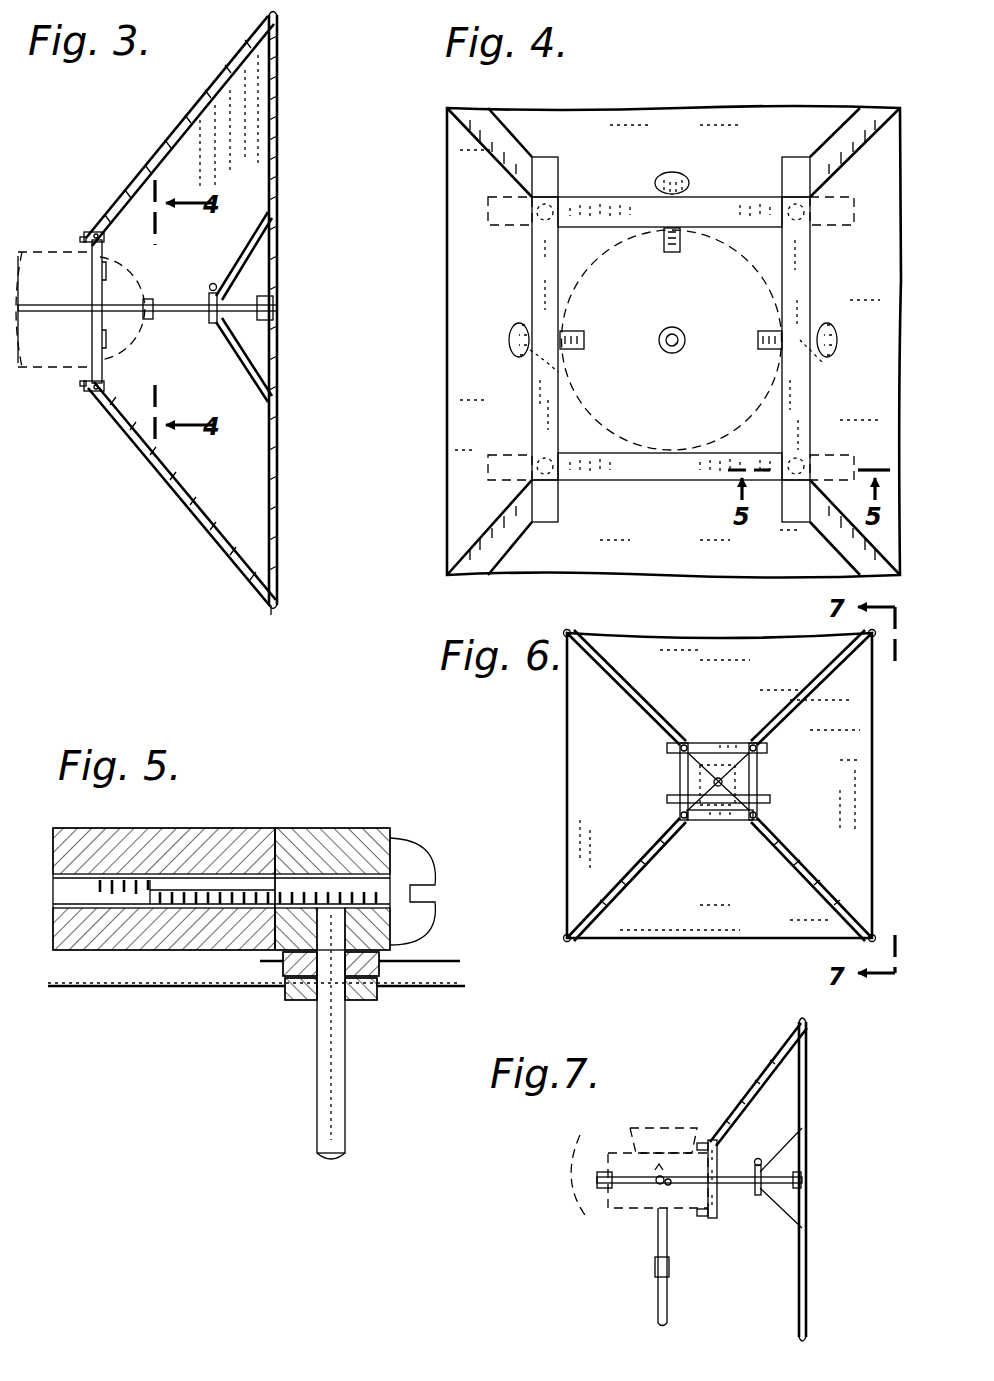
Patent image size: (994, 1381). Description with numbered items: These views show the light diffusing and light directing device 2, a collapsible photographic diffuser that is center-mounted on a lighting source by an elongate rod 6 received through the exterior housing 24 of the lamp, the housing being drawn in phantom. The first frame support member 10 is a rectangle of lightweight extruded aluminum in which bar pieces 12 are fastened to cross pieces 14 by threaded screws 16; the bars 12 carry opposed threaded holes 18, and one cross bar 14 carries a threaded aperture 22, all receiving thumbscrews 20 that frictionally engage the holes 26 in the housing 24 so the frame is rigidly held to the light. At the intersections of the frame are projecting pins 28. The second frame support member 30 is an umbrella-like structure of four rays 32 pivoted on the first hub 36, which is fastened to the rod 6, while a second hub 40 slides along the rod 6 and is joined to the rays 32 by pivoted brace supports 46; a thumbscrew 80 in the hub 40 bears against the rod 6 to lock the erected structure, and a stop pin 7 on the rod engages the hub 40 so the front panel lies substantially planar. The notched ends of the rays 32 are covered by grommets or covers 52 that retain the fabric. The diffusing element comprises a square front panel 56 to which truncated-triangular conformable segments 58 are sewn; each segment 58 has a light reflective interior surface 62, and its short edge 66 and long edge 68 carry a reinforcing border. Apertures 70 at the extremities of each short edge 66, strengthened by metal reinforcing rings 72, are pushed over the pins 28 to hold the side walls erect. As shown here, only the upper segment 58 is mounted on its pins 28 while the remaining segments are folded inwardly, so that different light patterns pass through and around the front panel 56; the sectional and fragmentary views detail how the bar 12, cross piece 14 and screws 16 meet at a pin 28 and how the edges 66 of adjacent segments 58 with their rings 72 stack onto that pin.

In FIG. 3, the light diffusing and light directing device 2 is at (286, 62).
In FIG. 6, the light diffusing and light directing device 2 is at (560, 718).
In FIG. 3, the elongate rod 6 is at (166, 312).
In FIG. 4, the elongate rod 6 is at (674, 330).
In FIG. 7, the elongate rod 6 is at (630, 1185).
In FIG. 3, the stop pin 7 is at (270, 322).
In FIG. 3, the first frame support member 10 is at (106, 360).
In FIG. 4, the first frame support member 10 is at (645, 483).
In FIG. 5, the first frame support member 10 is at (388, 828).
In FIG. 3, the bar pieces 12 is at (103, 280).
In FIG. 4, the bar pieces 12 is at (532, 286).
In FIG. 5, the bar pieces 12 is at (318, 832).
In FIG. 6, the bar pieces 12 is at (680, 790).
In FIG. 7, the bar pieces 12 is at (712, 1179).
In FIG. 3, the cross pieces 14 is at (105, 246).
In FIG. 4, the cross pieces 14 is at (745, 205).
In FIG. 5, the cross pieces 14 is at (178, 832).
In FIG. 6, the cross pieces 14 is at (708, 818).
In FIG. 4, the threaded screws 16 is at (530, 218).
In FIG. 5, the threaded screws 16 is at (412, 862).
In FIG. 4, the threaded holes 18 is at (540, 358).
In FIG. 4, the thumbscrews 20 is at (671, 172).
In FIG. 4, the threaded aperture 22 is at (665, 205).
In FIG. 3, the exterior housing 24 is at (55, 366).
In FIG. 4, the exterior housing 24 is at (796, 415).
In FIG. 7, the exterior housing 24 is at (600, 1140).
In FIG. 4, the holes 26 is at (682, 252).
In FIG. 3, the pins 28 is at (84, 238).
In FIG. 4, the pins 28 is at (543, 226).
In FIG. 5, the pins 28 is at (325, 1105).
In FIG. 6, the pins 28 is at (686, 745).
In FIG. 7, the pins 28 is at (702, 1143).
In FIG. 3, the second frame support member 30 is at (284, 258).
In FIG. 3, the rays 32 is at (279, 150).
In FIG. 6, the rays 32 is at (610, 886).
In FIG. 3, the first hub 36 is at (276, 306).
In FIG. 7, the first hub 36 is at (808, 1180).
In FIG. 3, the second hub 40 is at (212, 324).
In FIG. 7, the second hub 40 is at (762, 1195).
In FIG. 3, the brace supports 46 is at (240, 262).
In FIG. 3, the grommets or covers 52 is at (267, 606).
In FIG. 6, the grommets or covers 52 is at (569, 630).
In FIG. 3, the front panel 56 is at (279, 542).
In FIG. 7, the front panel 56 is at (808, 1106).
In FIG. 3, the conformable segments 58 is at (207, 160).
In FIG. 4, the conformable segments 58 is at (645, 125).
In FIG. 6, the conformable segments 58 is at (712, 658).
In FIG. 7, the conformable segments 58 is at (752, 1082).
In FIG. 3, the interior surface 62 is at (228, 112).
In FIG. 4, the short edge 66 is at (548, 170).
In FIG. 5, the short edge 66 is at (388, 965).
In FIG. 6, the short edge 66 is at (722, 750).
In FIG. 3, the long edge 68 is at (133, 192).
In FIG. 4, the long edge 68 is at (470, 125).
In FIG. 6, the long edge 68 is at (643, 700).
In FIG. 5, the apertures 70 is at (340, 968).
In FIG. 5, the metal reinforcing rings 72 is at (300, 1002).
In FIG. 6, the metal reinforcing rings 72 is at (680, 755).
In FIG. 3, the thumbscrew 80 is at (213, 284).
In FIG. 7, the thumbscrew 80 is at (757, 1160).